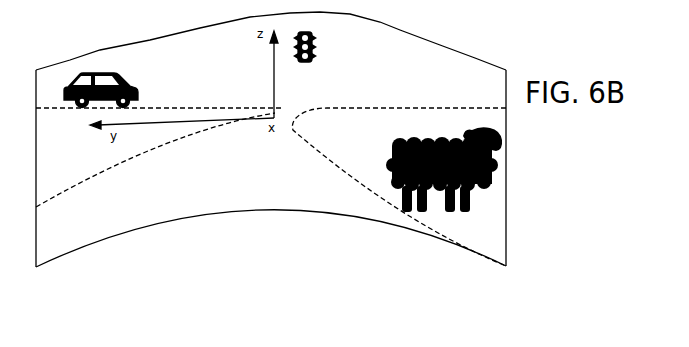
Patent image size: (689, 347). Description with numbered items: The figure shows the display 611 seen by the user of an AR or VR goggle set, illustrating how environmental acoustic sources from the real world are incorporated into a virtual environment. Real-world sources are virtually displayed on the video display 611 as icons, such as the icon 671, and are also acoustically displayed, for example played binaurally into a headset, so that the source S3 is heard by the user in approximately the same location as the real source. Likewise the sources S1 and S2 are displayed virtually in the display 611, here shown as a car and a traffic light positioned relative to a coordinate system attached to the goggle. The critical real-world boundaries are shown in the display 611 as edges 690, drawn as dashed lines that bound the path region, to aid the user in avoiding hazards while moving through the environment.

The display 611 is at (415, 35).
The icon 671 is at (398, 142).
The edges 690 is at (294, 150).
The source S1 is at (102, 84).
The source S2 is at (317, 47).
The source S3 is at (444, 165).